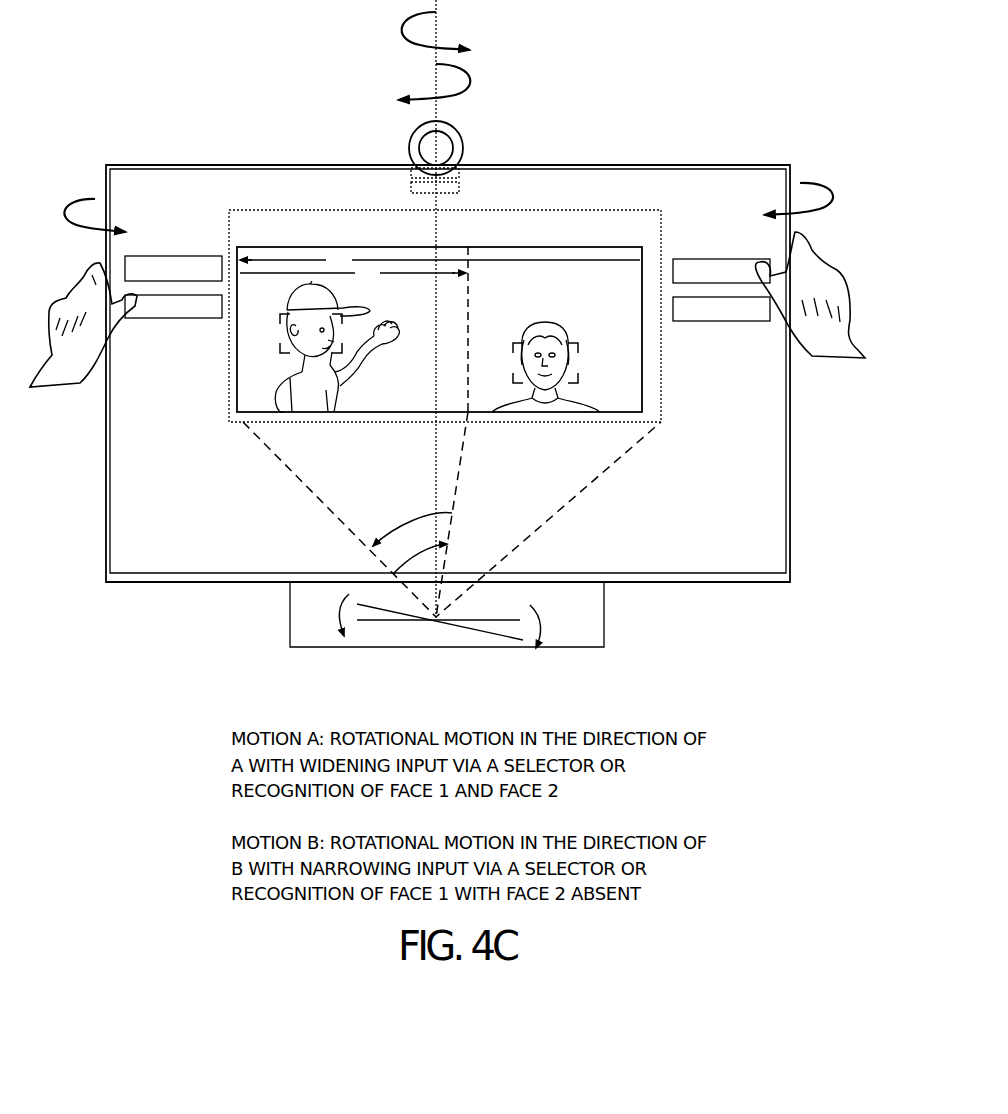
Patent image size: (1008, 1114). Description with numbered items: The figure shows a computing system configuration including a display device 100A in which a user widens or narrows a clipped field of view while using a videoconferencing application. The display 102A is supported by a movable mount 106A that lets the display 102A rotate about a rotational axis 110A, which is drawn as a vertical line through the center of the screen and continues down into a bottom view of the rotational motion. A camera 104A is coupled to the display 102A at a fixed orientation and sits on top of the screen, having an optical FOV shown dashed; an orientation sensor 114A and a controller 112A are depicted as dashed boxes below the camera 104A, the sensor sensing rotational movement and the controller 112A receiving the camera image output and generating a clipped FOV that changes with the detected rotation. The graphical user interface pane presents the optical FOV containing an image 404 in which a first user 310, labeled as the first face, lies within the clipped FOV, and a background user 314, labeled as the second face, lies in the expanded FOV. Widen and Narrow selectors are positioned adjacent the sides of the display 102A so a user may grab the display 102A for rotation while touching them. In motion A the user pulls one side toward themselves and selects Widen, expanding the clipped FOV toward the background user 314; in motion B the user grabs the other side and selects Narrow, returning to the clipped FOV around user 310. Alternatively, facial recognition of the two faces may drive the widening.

The display device 100A is at (245, 86).
The rotational axis 110A is at (436, 35).
The camera 104A is at (412, 128).
The orientation sensor 114A is at (462, 172).
The controller 112A is at (462, 188).
The display 102A is at (814, 600).
The movable mount 106A is at (290, 612).
The image 404 is at (642, 248).
The background user 314 is at (396, 336).
The user 310 is at (558, 328).